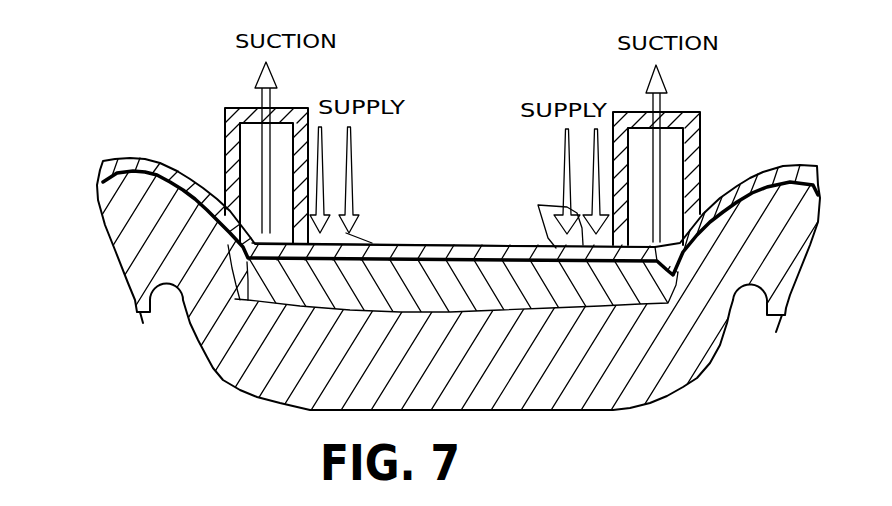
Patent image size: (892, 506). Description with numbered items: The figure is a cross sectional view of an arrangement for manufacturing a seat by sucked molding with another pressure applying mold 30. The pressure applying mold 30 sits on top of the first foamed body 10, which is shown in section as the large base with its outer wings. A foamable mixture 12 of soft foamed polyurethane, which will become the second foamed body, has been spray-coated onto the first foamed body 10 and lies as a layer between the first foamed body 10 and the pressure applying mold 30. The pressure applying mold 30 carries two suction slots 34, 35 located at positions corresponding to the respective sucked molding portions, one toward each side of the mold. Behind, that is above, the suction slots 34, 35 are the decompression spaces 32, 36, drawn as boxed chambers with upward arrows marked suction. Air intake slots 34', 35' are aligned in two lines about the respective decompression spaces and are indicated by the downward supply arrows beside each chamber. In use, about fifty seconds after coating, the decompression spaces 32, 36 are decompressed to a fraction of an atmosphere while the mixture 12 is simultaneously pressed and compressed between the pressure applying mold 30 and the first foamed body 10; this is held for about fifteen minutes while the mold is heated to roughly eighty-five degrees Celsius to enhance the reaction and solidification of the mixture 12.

The first foamed body 10 is at (528, 367).
The mixture 12 is at (567, 290).
The pressure applying mold 30 is at (437, 246).
The decompression space 32 is at (230, 106).
The suction slot 34 is at (181, 178).
The air intake slots 34' is at (376, 219).
The suction slot 35 is at (741, 187).
The air intake slots 35' is at (545, 211).
The decompression space 36 is at (700, 133).